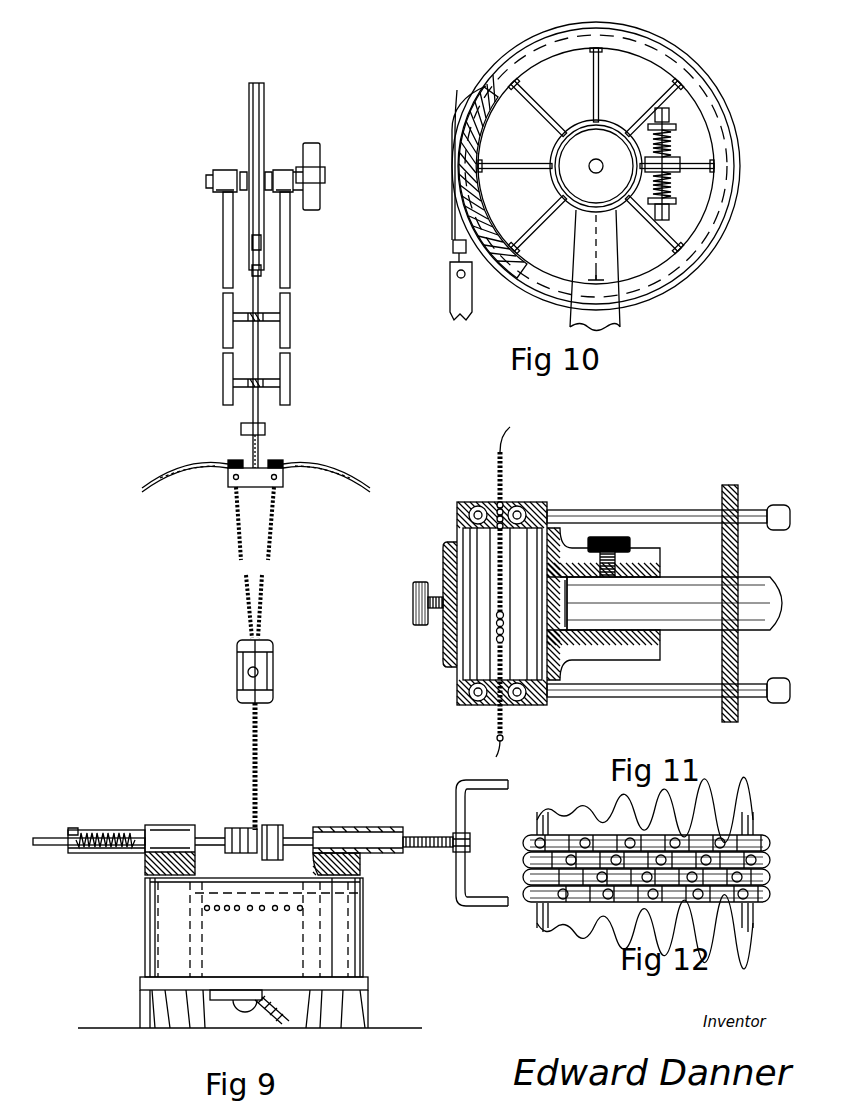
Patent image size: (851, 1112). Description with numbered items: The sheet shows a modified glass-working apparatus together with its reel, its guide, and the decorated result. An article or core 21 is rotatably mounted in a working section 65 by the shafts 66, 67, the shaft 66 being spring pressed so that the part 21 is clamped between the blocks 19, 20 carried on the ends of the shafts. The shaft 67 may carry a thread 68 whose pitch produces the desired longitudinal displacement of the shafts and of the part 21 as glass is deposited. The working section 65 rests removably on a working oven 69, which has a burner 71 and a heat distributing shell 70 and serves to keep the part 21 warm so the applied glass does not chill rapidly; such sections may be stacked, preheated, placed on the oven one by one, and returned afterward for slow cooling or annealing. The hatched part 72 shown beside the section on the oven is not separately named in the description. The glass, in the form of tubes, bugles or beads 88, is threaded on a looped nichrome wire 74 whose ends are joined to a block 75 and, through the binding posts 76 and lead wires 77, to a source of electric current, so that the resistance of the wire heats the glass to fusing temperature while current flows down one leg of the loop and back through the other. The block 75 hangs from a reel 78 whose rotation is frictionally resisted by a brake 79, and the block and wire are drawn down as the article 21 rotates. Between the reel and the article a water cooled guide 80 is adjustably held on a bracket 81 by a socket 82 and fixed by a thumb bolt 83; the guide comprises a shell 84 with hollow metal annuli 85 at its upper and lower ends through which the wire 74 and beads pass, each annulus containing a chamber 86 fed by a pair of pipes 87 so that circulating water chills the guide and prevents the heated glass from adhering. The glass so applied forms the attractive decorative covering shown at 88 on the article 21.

In FIG. 9, the block 19 is at (222, 835).
In FIG. 9, the block 20 is at (285, 827).
In FIG. 9, the article or core 21 is at (264, 826).
In FIG. 12, the article or core 21 is at (740, 815).
In FIG. 9, the working section 65 is at (335, 828).
In FIG. 9, the shaft 66 is at (197, 842).
In FIG. 9, the shaft 67 is at (316, 826).
In FIG. 9, the thread 68 is at (412, 837).
In FIG. 9, the working oven 69 is at (357, 932).
In FIG. 9, the heat distributing shell 70 is at (220, 938).
In FIG. 9, the burner 71 is at (275, 1020).
In FIG. 9, the bearing housing 72 is at (338, 863).
In FIG. 9, the nichrome wire 74 is at (283, 452).
In FIG. 11, the nichrome wire 74 is at (508, 431).
In FIG. 9, the block 75 is at (254, 452).
In FIG. 9, the binding posts 76 is at (233, 461).
In FIG. 9, the lead wires 77 is at (180, 472).
In FIG. 9, the reel 78 is at (262, 148).
In FIG. 10, the reel 78 is at (712, 110).
In FIG. 9, the brake 79 is at (313, 154).
In FIG. 10, the brake 79 is at (600, 122).
In FIG. 11, the water cooled guide 80 is at (446, 660).
In FIG. 11, the bracket 81 is at (742, 593).
In FIG. 11, the socket 82 is at (640, 568).
In FIG. 11, the thumb bolt 83 is at (612, 537).
In FIG. 9, the shell 84 is at (269, 648).
In FIG. 11, the shell 84 is at (457, 533).
In FIG. 11, the metal annuli 85 is at (522, 508).
In FIG. 11, the chamber 86 is at (478, 510).
In FIG. 11, the pipes 87 is at (750, 512).
In FIG. 9, the beads 88 is at (258, 738).
In FIG. 12, the beads 88 is at (765, 833).